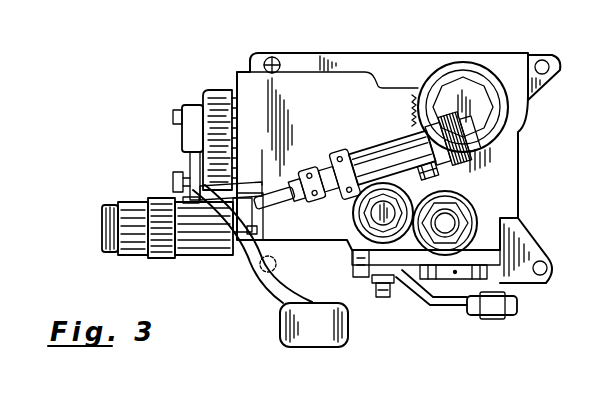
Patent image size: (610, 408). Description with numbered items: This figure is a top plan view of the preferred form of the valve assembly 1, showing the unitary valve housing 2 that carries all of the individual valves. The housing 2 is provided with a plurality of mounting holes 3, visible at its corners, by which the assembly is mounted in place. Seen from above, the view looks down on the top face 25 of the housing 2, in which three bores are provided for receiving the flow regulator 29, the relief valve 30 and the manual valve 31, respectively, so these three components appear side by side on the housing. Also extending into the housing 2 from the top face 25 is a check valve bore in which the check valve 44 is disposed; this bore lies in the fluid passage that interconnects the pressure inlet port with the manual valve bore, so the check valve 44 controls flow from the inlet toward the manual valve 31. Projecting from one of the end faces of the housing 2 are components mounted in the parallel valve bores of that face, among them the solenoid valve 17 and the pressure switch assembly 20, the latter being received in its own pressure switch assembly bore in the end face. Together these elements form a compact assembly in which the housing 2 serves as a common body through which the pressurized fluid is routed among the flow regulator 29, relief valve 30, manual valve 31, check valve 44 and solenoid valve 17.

The valve assembly 1 is at (231, 60).
The valve housing 2 is at (512, 177).
The mounting holes 3 is at (550, 61).
The solenoid valve 17 is at (140, 255).
The pressure switch assembly 20 is at (358, 148).
The top face 25 is at (297, 82).
The flow regulator 29 is at (513, 109).
The relief valve 30 is at (486, 212).
The manual valve 31 is at (351, 213).
The check valve 44 is at (449, 176).